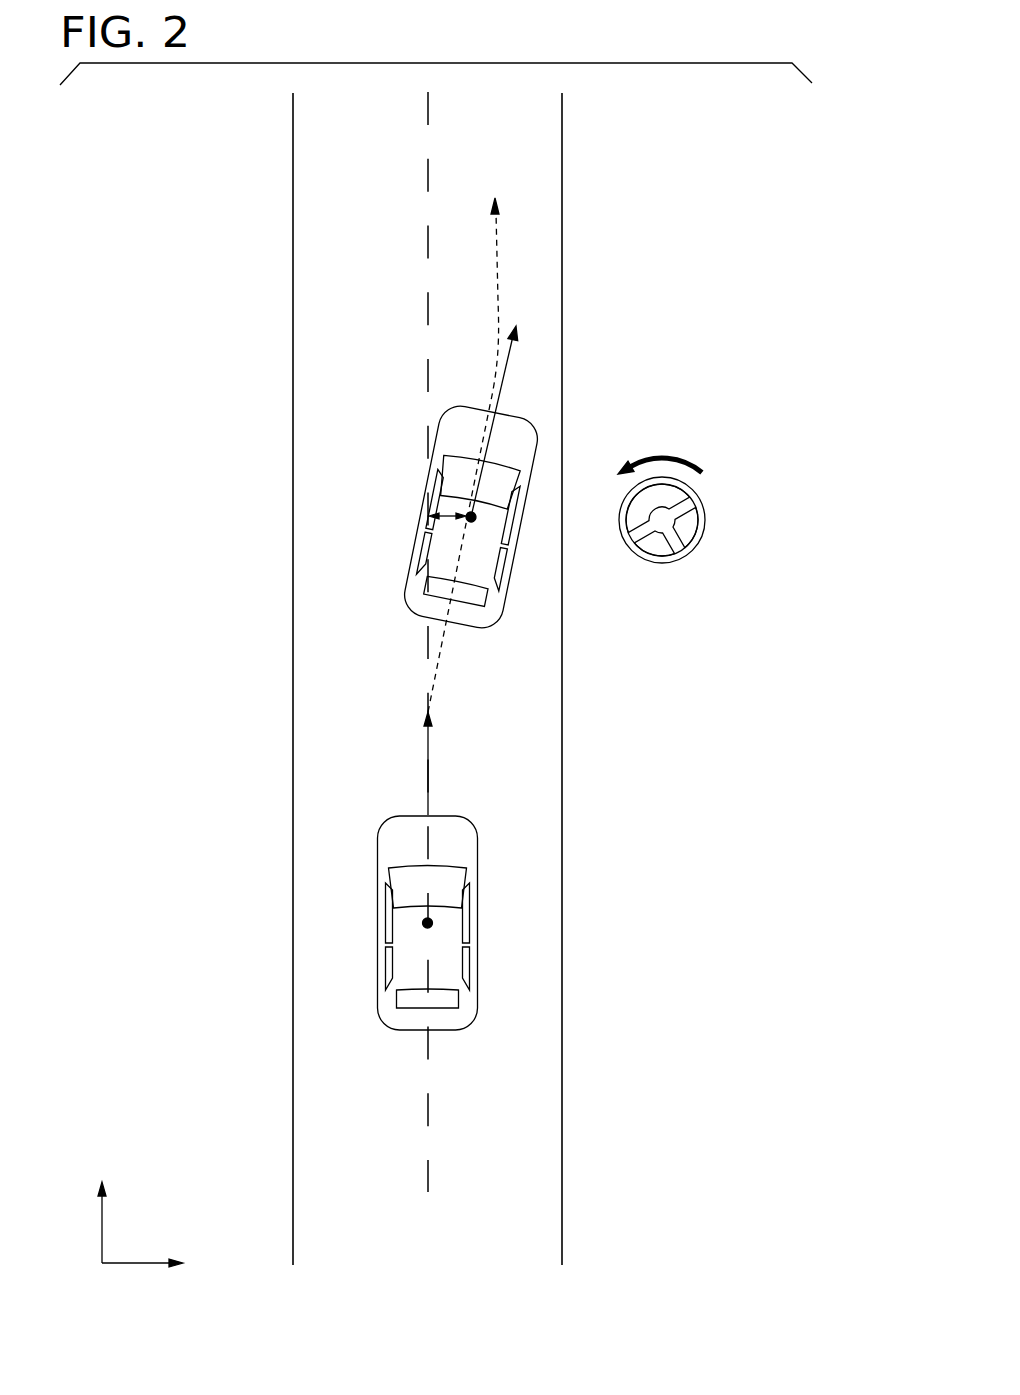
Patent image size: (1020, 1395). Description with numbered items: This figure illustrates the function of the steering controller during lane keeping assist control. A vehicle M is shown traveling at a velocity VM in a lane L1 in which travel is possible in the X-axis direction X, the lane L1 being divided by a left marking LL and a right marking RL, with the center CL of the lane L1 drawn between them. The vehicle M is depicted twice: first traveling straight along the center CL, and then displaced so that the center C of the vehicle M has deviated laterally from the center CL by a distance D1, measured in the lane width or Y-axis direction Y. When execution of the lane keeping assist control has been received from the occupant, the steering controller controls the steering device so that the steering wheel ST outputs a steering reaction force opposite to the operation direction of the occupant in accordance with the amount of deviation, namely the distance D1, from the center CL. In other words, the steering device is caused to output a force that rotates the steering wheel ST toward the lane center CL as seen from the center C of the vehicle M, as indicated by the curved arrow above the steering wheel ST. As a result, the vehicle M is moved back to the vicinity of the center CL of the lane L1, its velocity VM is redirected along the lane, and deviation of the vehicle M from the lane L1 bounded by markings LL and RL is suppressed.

The center of the lane CL is at (429, 110).
The marking LL is at (292, 1130).
The marking RL is at (563, 1130).
The lane L1 is at (441, 1264).
The velocity VM is at (505, 383).
The vehicle M is at (416, 533).
The center of the vehicle C is at (474, 521).
The distance D1 is at (447, 521).
The steering wheel ST is at (705, 517).
The X-axis direction X is at (102, 1209).
The Y-axis direction Y is at (153, 1263).